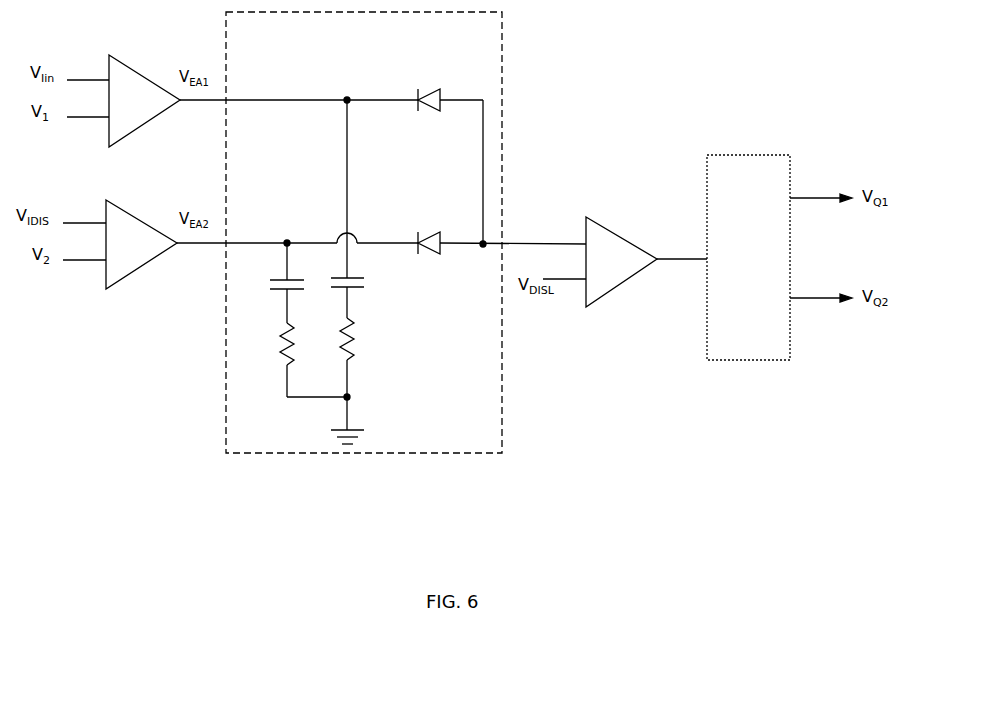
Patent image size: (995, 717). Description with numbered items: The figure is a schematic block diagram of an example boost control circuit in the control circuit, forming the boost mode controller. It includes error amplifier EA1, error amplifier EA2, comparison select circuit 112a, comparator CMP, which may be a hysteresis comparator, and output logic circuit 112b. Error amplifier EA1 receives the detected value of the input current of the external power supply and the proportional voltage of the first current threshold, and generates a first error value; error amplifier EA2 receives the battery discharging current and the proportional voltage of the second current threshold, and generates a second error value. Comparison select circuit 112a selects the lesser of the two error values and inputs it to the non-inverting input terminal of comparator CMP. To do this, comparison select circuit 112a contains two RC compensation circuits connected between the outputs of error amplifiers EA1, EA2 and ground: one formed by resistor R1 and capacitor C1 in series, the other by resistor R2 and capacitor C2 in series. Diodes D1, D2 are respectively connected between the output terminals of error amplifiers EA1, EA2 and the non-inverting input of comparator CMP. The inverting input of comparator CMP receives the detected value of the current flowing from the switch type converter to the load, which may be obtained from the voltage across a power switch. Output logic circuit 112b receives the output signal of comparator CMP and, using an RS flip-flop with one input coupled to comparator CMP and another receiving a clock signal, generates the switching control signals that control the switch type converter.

The comparison select circuit 112a is at (381, 232).
The output logic circuit 112b is at (748, 257).
The error amplifier EA1 is at (144, 101).
The error amplifier EA2 is at (141, 244).
The comparator CMP is at (621, 262).
The diode D1 is at (427, 87).
The diode D2 is at (427, 231).
The capacitor C1 is at (362, 285).
The capacitor C2 is at (272, 290).
The resistor R1 is at (368, 343).
The resistor R2 is at (267, 345).